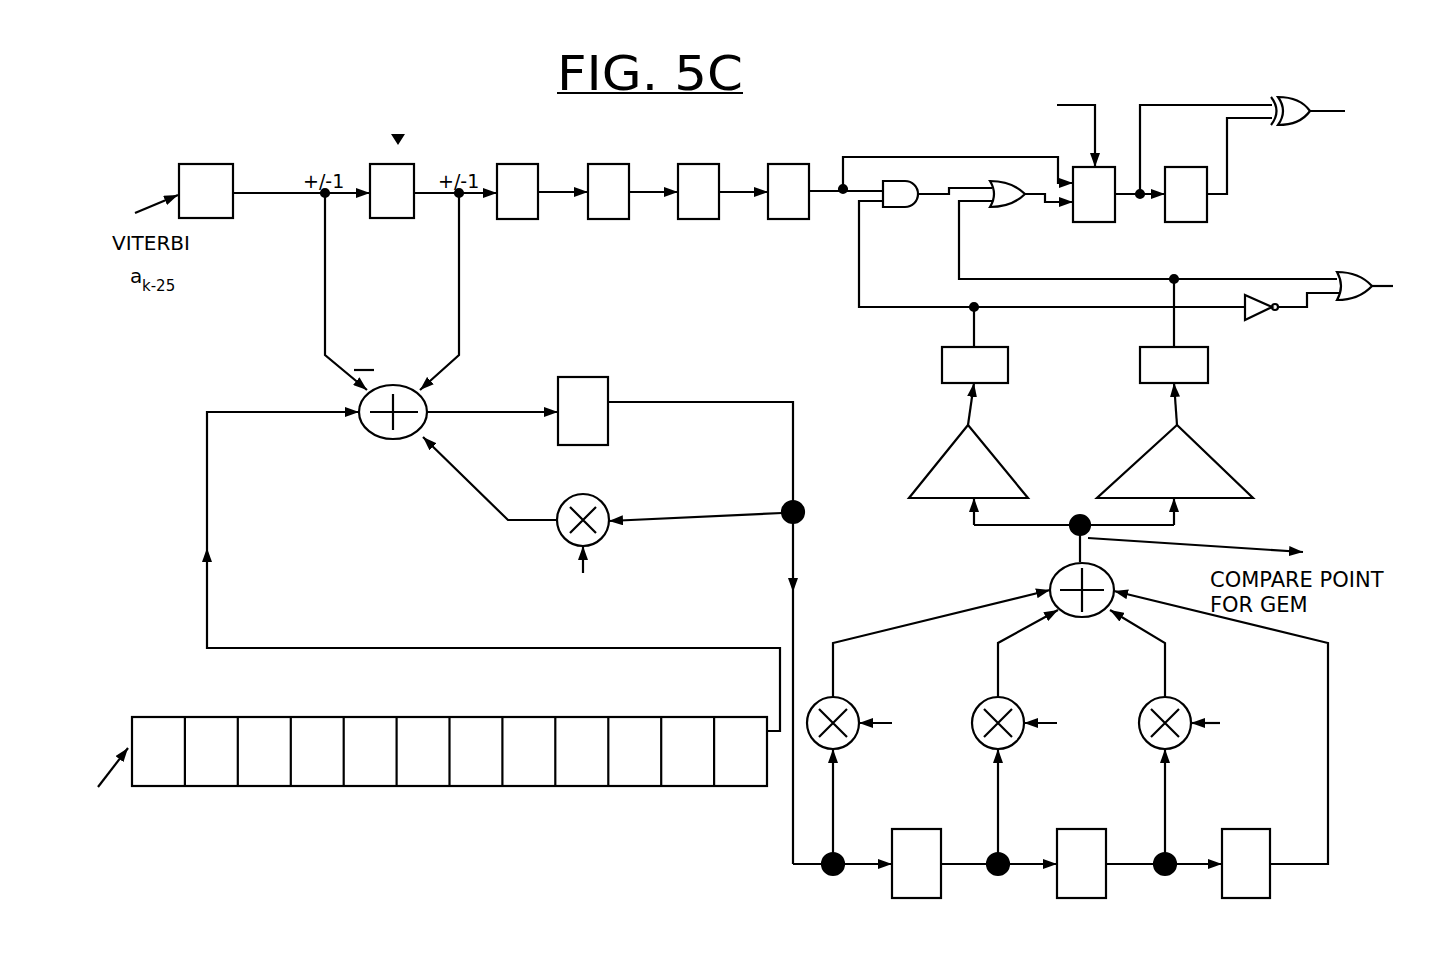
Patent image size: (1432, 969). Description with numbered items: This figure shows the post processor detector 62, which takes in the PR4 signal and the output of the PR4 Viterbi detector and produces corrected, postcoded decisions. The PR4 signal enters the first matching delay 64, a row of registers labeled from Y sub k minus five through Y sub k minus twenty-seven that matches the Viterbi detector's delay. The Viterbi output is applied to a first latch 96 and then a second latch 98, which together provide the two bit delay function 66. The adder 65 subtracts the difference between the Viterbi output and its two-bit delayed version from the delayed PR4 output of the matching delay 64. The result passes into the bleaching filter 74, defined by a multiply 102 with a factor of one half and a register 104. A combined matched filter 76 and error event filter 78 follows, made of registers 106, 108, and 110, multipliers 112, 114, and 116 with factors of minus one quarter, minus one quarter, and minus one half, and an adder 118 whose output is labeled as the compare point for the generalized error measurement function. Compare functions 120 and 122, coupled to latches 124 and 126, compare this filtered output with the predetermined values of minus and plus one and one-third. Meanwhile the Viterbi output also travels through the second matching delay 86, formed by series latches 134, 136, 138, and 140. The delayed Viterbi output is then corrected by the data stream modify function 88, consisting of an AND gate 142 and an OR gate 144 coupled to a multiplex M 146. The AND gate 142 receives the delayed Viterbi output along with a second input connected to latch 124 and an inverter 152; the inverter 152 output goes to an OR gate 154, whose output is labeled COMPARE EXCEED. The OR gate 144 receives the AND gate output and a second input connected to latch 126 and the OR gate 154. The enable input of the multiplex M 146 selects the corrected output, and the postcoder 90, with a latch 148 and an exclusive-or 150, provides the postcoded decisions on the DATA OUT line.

The post processor detector 62 is at (756, 344).
The first matching delay 64 is at (427, 787).
The adder 65 is at (370, 435).
The two bit delay function 66 is at (400, 129).
The bleaching filter 74 is at (562, 485).
The matched filter 76 is at (920, 595).
The error event filter 78 is at (915, 534).
The second matching delay 86 is at (662, 250).
The data stream modify function 88 is at (992, 88).
The postcoder 90 is at (1248, 67).
The first latch 96 is at (204, 192).
The second latch 98 is at (392, 208).
The multiply 102 is at (558, 533).
The register 104 is at (585, 391).
The register 106 is at (974, 842).
The register 108 is at (1139, 842).
The register 110 is at (1247, 842).
The multiplier 112 is at (848, 748).
The multiplier 114 is at (1018, 742).
The multiplier 116 is at (1178, 698).
The adder 118 is at (1103, 562).
The compare function 120 is at (998, 456).
The compare function 122 is at (1218, 457).
The latch 124 is at (975, 345).
The latch 126 is at (1174, 331).
The latch 134 is at (517, 191).
The latch 136 is at (608, 191).
The latch 138 is at (698, 191).
The latch 140 is at (788, 191).
The AND gate 142 is at (1052, 244).
The OR gate 144 is at (1148, 230).
The multiplex M 146 is at (1119, 209).
The latch 148 is at (1178, 192).
The exclusive-or 150 is at (1307, 125).
The inverter 152 is at (1283, 320).
The OR gate 154 is at (1341, 305).